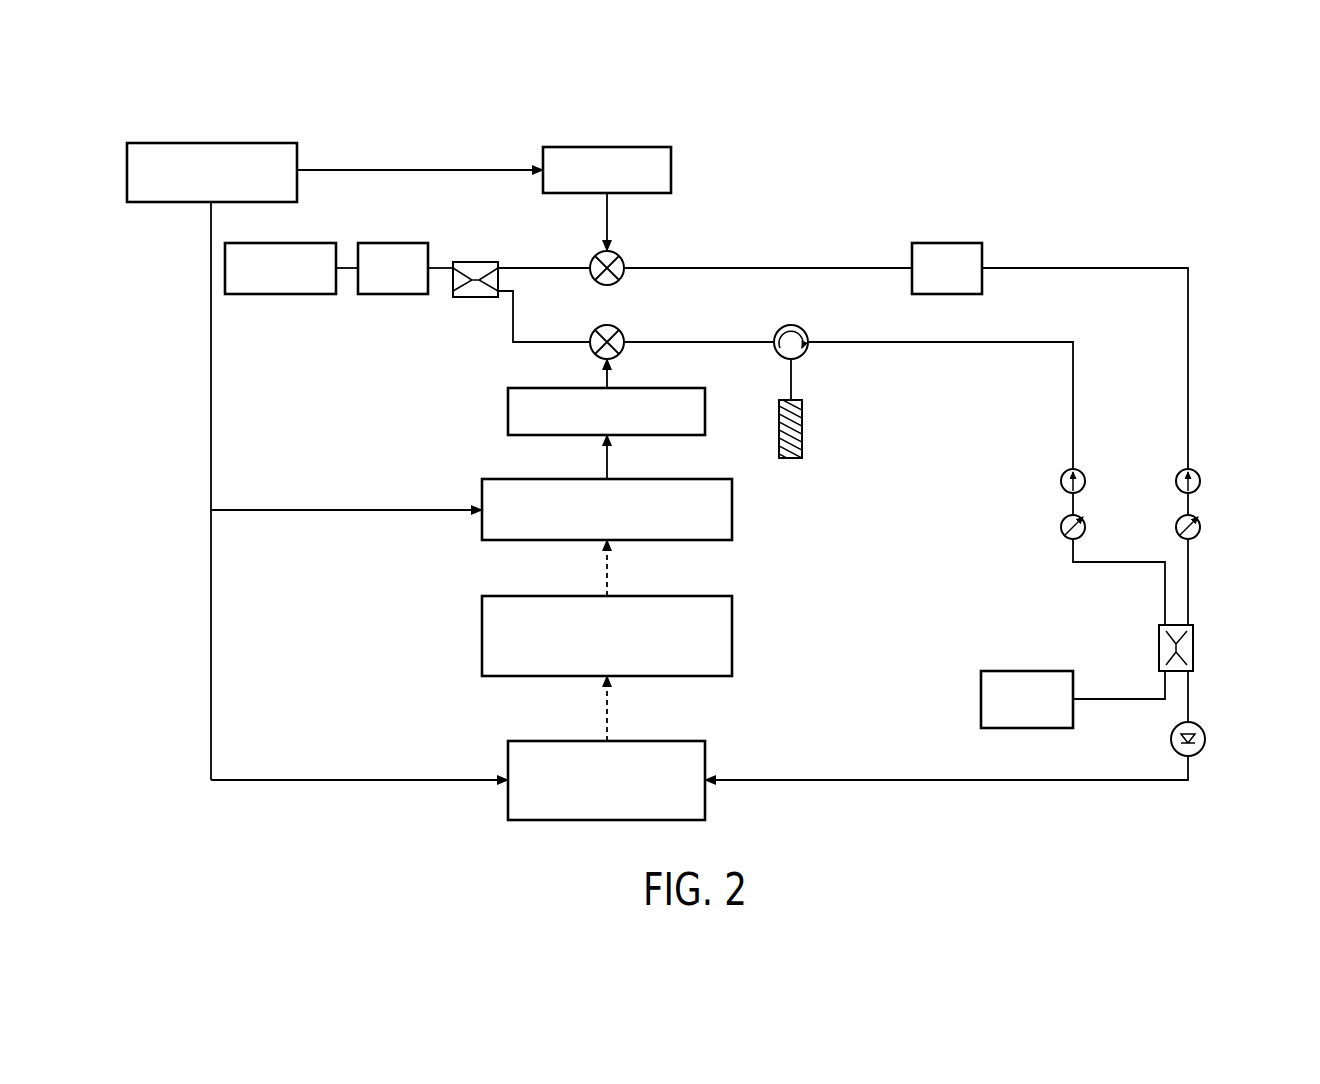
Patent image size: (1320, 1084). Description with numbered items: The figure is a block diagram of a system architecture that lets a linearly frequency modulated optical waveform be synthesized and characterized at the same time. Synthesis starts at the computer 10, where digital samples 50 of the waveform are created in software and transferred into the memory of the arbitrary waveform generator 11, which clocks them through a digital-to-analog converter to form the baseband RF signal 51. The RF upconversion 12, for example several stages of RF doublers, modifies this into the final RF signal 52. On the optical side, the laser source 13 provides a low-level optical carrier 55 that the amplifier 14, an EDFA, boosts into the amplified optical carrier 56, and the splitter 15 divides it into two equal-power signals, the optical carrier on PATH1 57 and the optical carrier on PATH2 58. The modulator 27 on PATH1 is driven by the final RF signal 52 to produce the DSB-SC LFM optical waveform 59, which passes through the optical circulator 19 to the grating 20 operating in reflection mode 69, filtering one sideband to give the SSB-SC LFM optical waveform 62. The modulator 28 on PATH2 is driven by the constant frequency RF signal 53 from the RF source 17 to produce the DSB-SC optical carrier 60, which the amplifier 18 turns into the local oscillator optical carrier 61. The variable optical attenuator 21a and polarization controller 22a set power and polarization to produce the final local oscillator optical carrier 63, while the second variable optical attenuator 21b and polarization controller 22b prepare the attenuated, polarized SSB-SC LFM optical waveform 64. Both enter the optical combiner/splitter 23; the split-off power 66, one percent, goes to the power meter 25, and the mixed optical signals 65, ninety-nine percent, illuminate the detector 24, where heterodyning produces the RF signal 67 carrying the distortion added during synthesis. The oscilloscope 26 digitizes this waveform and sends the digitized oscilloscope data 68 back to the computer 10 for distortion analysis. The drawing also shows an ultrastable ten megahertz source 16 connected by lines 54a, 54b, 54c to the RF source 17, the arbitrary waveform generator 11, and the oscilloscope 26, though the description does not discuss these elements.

The computer 10 is at (472, 659).
The arbitrary waveform generator 11 is at (474, 534).
The RF upconversion 12 is at (498, 430).
The laser source 13 is at (277, 300).
The amplifier 14 is at (382, 300).
The splitter 15 is at (475, 303).
The ultrastable 10 MHz source 16 is at (190, 137).
The RF source 17 is at (567, 140).
The amplifier 18 is at (933, 238).
The optical circulator 19 is at (786, 319).
The grating 20 is at (775, 447).
The variable optical attenuator 21a is at (1083, 462).
The second variable optical attenuator 21b is at (1198, 462).
The polarization controller 22a is at (1090, 527).
The polarization controller 22b is at (1174, 514).
The optical combiner/splitter 23 is at (1200, 643).
The detector 24 is at (1213, 739).
The power meter 25 is at (993, 663).
The oscilloscope 26 is at (555, 826).
The modulator 27 is at (624, 333).
The modulator 28 is at (623, 279).
The digital samples 50 is at (622, 568).
The baseband RF signal 51 is at (622, 458).
The final RF signal 52 is at (620, 372).
The constant frequency RF signal 53 is at (620, 217).
The 10 MHz reference to RF source 54a is at (333, 158).
The 10 MHz reference to AWG 54b is at (345, 500).
The 10 MHz reference to oscilloscope 54c is at (358, 770).
The optical carrier 55 is at (347, 240).
The amplified optical carrier 56 is at (441, 257).
The optical carrier on PATH1 57 is at (512, 358).
The optical carrier on PATH2 58 is at (531, 238).
The DSB-SC LFM optical waveform 59 is at (733, 333).
The DSB-SC optical carrier 60 is at (797, 258).
The local oscillator optical carrier 61 is at (1040, 258).
The SSB-SC LFM optical waveform 62 is at (935, 352).
The final local oscillator optical carrier 63 is at (1157, 585).
The attenuated, polarized SSB-SC LFM optical waveform 64 is at (1197, 585).
The mixed optical signals 65 is at (1197, 698).
The split-off power 66 is at (1125, 692).
The RF signal 67 is at (1158, 787).
The digitized oscilloscope data 68 is at (618, 711).
The reflection mode 69 is at (797, 390).